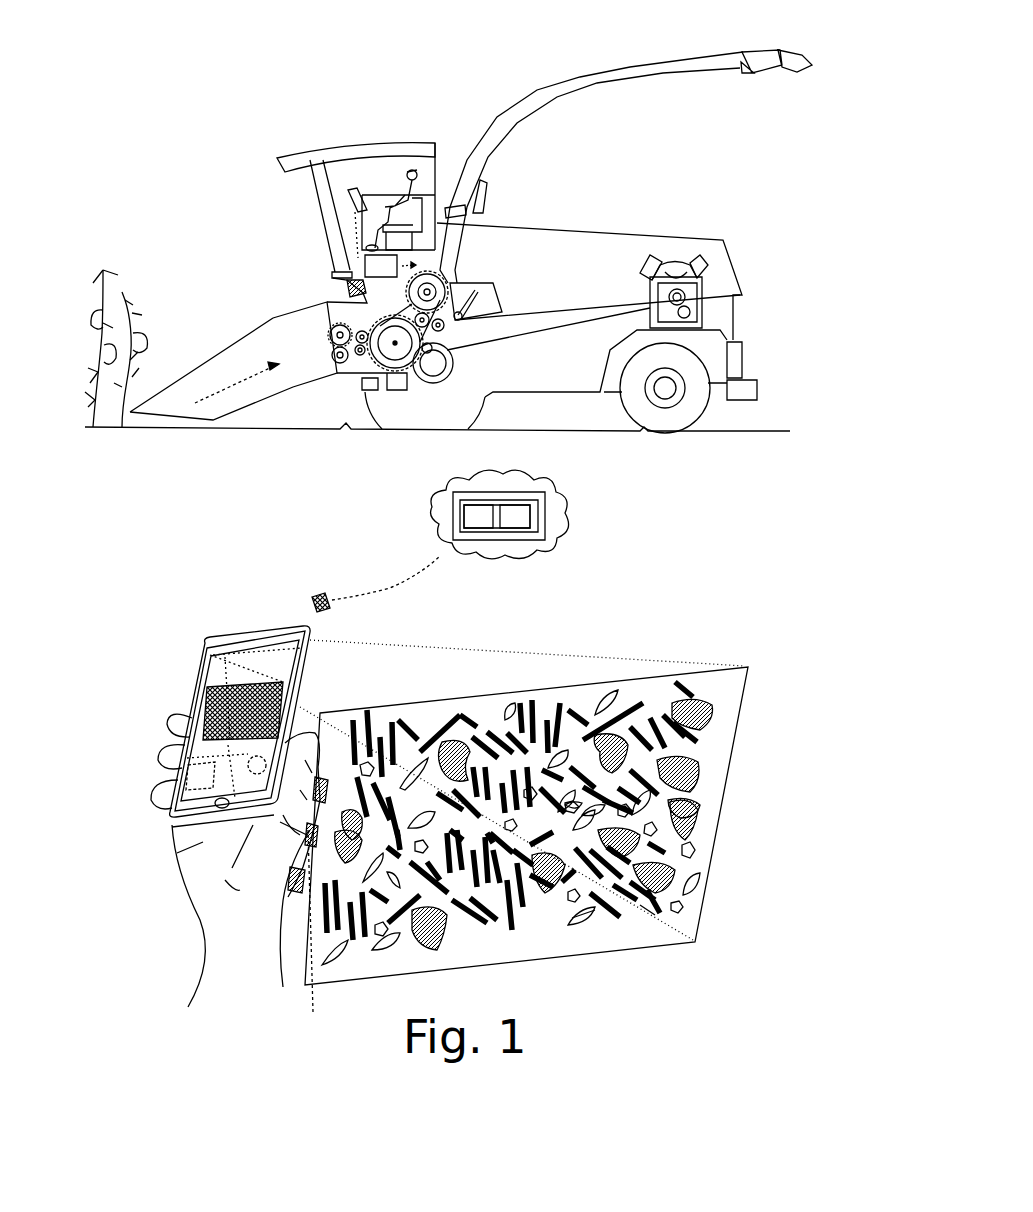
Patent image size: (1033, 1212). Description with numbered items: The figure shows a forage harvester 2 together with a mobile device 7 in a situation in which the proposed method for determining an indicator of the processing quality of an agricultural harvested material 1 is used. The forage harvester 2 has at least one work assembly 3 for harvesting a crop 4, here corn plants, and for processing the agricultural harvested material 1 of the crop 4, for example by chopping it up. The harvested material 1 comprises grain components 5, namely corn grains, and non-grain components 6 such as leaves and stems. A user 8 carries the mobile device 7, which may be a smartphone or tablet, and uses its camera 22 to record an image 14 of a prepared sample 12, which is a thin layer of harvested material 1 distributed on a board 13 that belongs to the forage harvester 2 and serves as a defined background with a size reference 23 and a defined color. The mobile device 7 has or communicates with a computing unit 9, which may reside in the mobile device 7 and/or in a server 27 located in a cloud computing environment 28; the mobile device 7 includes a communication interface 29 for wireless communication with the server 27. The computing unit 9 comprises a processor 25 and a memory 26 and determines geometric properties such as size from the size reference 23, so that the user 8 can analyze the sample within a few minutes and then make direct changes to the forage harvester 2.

The agricultural harvested material 1 is at (546, 824).
The forage harvester 2 is at (263, 56).
The work assembly 3 is at (246, 311).
The crop 4 is at (133, 273).
The grain components 5 is at (676, 910).
The non-grain components 6 is at (705, 703).
The mobile device 7 is at (202, 698).
The user 8 is at (398, 200).
The computing unit 9 is at (498, 539).
The prepared sample 12 is at (733, 963).
The board 13 is at (704, 854).
The image 14 is at (204, 697).
The camera 22 is at (225, 655).
The size reference 23 is at (317, 939).
The processor 25 is at (478, 516).
The memory 26 is at (515, 516).
The server 27 is at (563, 517).
The cloud computing environment 28 is at (432, 503).
The communication interface 29 is at (248, 762).